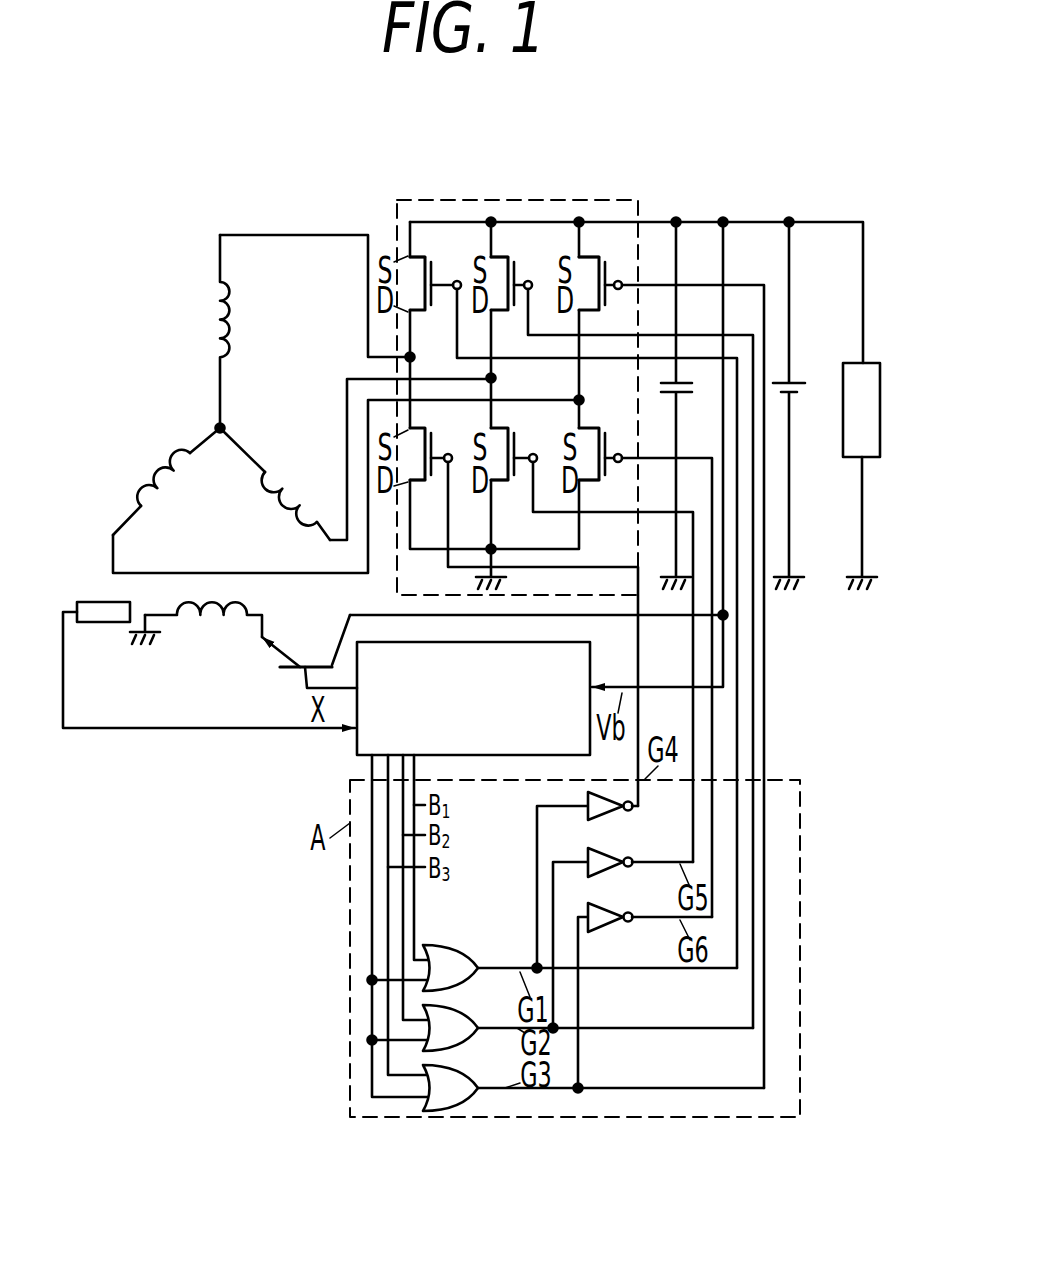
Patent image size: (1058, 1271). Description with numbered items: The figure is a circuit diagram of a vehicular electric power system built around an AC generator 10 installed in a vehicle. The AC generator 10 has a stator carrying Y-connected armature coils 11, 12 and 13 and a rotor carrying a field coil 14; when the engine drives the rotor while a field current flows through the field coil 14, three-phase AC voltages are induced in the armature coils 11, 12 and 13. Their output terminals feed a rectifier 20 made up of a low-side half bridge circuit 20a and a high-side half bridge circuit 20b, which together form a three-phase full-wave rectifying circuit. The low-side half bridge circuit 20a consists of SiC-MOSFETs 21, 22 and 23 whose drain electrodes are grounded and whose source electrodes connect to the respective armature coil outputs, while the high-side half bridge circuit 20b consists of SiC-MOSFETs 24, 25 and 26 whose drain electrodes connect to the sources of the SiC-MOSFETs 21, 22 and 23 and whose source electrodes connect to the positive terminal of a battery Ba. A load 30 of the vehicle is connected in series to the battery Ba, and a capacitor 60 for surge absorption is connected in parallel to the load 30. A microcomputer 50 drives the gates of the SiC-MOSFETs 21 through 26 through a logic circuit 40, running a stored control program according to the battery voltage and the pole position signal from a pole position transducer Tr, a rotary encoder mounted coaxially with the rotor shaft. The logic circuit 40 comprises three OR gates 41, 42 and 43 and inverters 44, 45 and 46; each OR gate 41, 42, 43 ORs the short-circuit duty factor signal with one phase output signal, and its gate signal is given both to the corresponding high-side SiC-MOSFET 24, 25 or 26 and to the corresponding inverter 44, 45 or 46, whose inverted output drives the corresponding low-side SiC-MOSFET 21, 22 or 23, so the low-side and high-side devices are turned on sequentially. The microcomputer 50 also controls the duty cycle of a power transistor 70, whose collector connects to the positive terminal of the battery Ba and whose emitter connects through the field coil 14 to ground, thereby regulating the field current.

The AC generator 10 is at (168, 695).
The armature coil 11 is at (229, 314).
The armature coil 12 is at (285, 468).
The armature coil 13 is at (167, 468).
The field coil 14 is at (232, 617).
The rectifier 20 is at (540, 198).
The low-side half bridge circuit 20a is at (575, 557).
The high-side half bridge circuit 20b is at (478, 245).
The SiC-MOSFET 21 is at (437, 450).
The SiC-MOSFET 22 is at (522, 450).
The SiC-MOSFET 23 is at (602, 447).
The SiC-MOSFET 24 is at (421, 259).
The SiC-MOSFET 25 is at (507, 258).
The SiC-MOSFET 26 is at (583, 258).
The load 30 is at (867, 363).
The logic circuit 40 is at (325, 1005).
The OR gate 41 is at (463, 958).
The OR gate 42 is at (465, 1019).
The OR gate 43 is at (465, 1078).
The inverter 44 is at (612, 813).
The inverter 45 is at (612, 870).
The inverter 46 is at (612, 926).
The microcomputer 50 is at (357, 733).
The capacitor 60 is at (685, 395).
The power transistor 70 is at (302, 668).
The pole position transducer Tr is at (90, 601).
The battery Ba is at (798, 382).